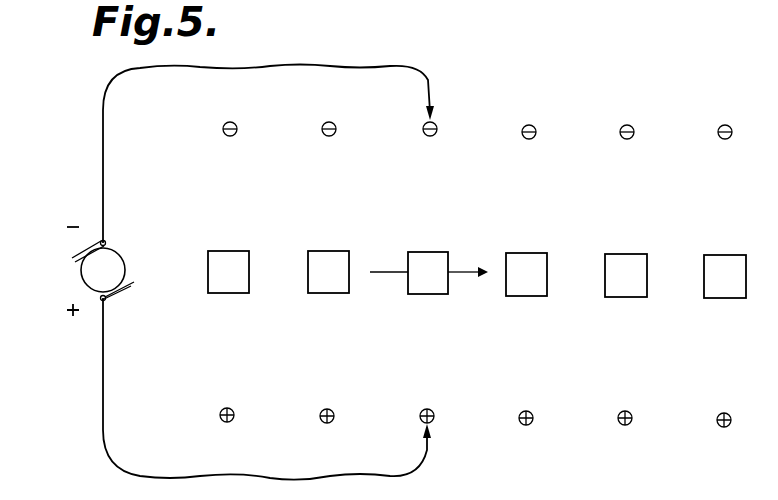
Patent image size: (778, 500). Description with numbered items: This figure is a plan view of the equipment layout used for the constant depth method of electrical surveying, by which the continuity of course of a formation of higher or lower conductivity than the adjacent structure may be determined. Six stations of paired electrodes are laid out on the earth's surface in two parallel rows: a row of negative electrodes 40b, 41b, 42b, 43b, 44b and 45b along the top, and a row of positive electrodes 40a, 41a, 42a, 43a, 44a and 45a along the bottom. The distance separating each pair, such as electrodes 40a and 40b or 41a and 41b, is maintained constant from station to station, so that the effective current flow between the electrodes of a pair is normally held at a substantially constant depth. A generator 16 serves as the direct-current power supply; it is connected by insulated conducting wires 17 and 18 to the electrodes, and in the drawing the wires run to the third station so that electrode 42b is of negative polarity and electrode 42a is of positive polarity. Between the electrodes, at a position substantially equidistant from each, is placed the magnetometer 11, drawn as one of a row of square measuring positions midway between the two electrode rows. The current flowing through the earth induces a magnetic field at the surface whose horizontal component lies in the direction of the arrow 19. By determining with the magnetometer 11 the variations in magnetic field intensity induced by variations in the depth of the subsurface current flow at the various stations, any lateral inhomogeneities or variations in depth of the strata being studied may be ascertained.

The magnetometer 11 is at (420, 252).
The generator 16 is at (124, 261).
The insulated conducting wire 17 is at (103, 222).
The insulated conducting wire 18 is at (103, 363).
The arrow 19 is at (390, 272).
The electrode 40a is at (225, 401).
The electrode 40b is at (227, 141).
The electrode 41a is at (326, 402).
The electrode 41b is at (327, 141).
The electrode 42a is at (425, 402).
The electrode 42b is at (426, 141).
The electrode 43a is at (523, 404).
The electrode 43b is at (525, 143).
The electrode 44a is at (622, 404).
The electrode 44b is at (623, 143).
The electrode 45a is at (721, 405).
The electrode 45b is at (721, 143).